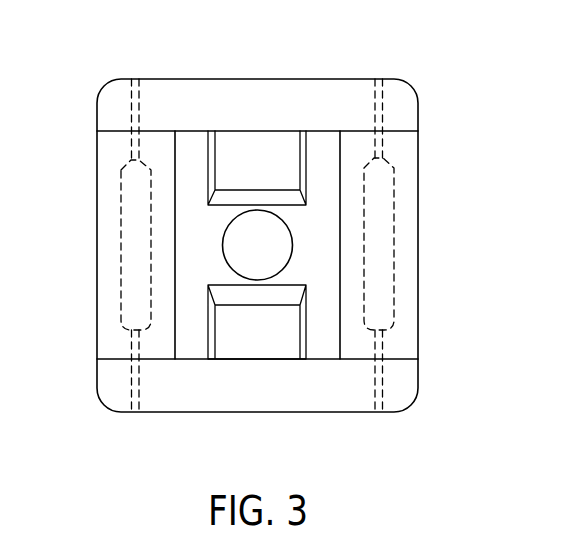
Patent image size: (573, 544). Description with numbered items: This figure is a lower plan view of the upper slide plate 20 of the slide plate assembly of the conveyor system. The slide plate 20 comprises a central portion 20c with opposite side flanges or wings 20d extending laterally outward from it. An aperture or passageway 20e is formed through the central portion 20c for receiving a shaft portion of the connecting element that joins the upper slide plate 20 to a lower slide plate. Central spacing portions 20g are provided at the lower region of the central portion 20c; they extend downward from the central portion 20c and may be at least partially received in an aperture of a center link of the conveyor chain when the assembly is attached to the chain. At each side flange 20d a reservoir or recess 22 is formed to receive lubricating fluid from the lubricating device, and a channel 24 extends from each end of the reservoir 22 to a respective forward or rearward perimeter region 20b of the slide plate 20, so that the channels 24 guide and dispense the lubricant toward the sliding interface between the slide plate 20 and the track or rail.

The upper slide plate 20 is at (258, 58).
The outer perimeter edge or perimeter region 20b is at (300, 79).
The central portion 20c is at (323, 145).
The side flanges or wings 20d is at (108, 163).
The aperture or passageway 20e is at (241, 235).
The central spacing portions 20g is at (283, 340).
The reservoir or recess 22 is at (121, 223).
The channel or trough 24 is at (140, 118).